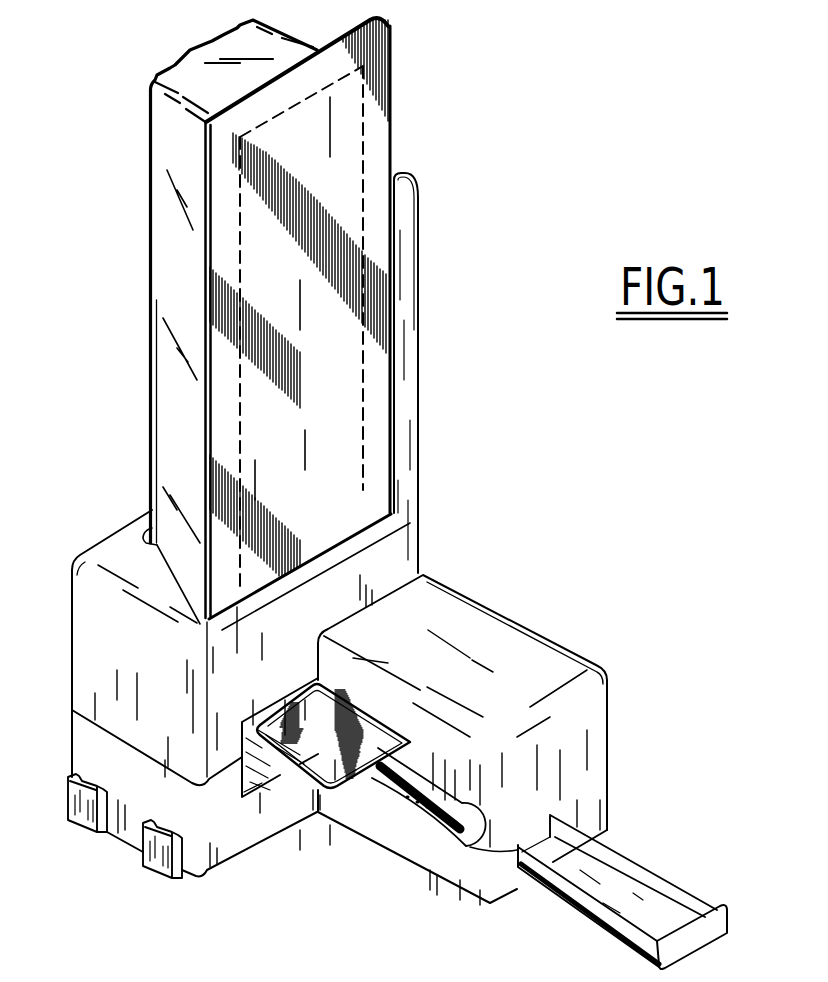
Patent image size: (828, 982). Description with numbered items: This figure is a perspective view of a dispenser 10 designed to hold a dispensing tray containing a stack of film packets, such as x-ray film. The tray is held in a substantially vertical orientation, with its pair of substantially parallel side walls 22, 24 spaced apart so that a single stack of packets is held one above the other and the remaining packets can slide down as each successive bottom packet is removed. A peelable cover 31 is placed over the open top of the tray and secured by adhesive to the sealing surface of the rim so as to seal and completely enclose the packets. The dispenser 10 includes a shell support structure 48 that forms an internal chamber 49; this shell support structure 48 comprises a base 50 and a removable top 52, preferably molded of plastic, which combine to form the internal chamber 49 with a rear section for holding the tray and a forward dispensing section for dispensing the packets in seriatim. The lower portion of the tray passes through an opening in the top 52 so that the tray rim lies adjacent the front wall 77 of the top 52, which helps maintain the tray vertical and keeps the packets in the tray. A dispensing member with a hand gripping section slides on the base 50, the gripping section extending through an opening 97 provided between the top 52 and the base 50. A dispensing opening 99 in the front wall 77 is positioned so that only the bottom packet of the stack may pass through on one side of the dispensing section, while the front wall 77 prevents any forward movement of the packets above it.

The dispenser 10 is at (592, 475).
The side wall 22 is at (168, 257).
The side wall 24 is at (316, 47).
The peelable cover 31 is at (343, 150).
The shell support structure 48 is at (72, 640).
The internal chamber 49 is at (276, 782).
The base 50 is at (451, 875).
The removable top 52 is at (552, 658).
The front wall 77 is at (250, 702).
The opening 97 is at (519, 868).
The dispensing opening 99 is at (401, 803).